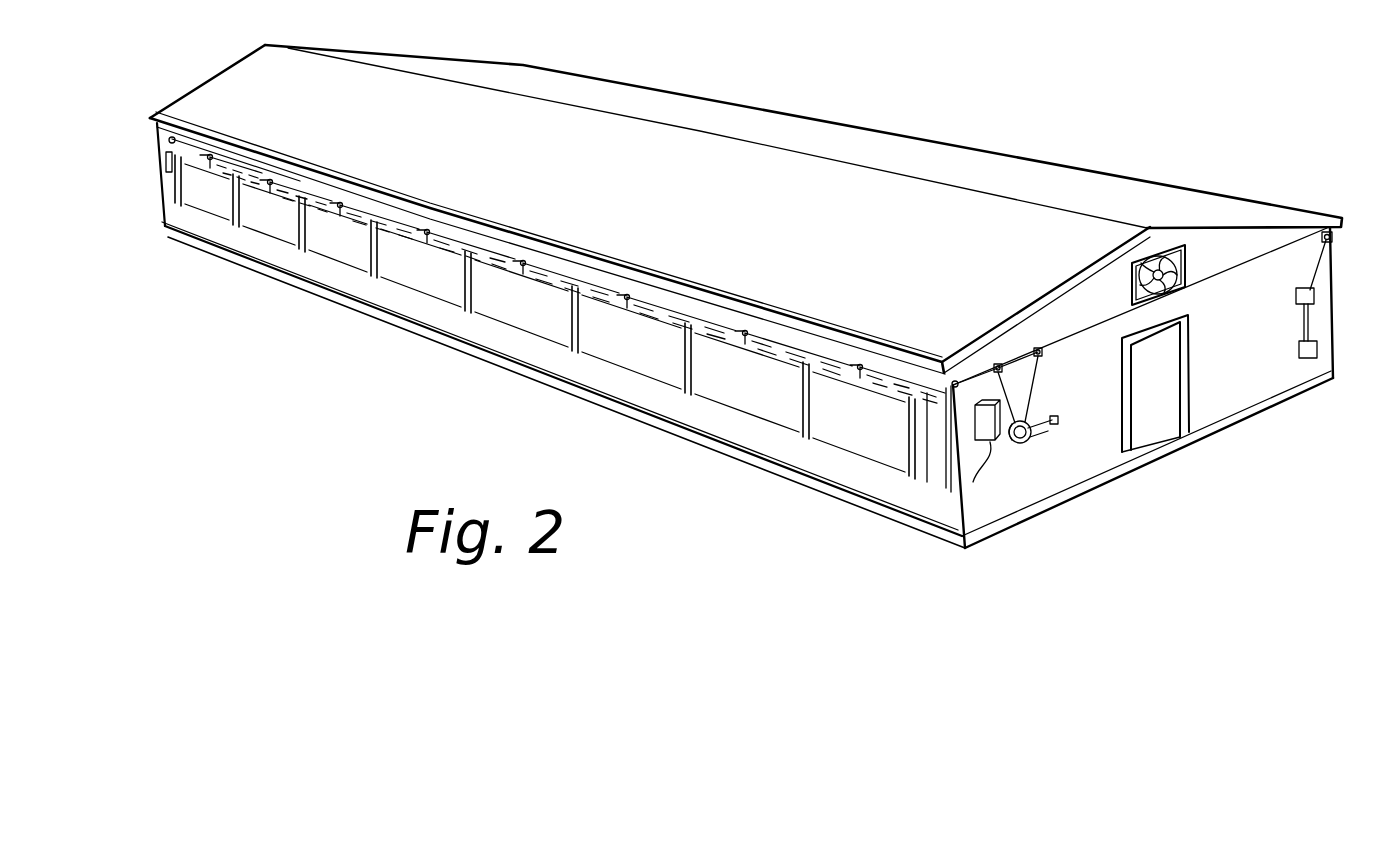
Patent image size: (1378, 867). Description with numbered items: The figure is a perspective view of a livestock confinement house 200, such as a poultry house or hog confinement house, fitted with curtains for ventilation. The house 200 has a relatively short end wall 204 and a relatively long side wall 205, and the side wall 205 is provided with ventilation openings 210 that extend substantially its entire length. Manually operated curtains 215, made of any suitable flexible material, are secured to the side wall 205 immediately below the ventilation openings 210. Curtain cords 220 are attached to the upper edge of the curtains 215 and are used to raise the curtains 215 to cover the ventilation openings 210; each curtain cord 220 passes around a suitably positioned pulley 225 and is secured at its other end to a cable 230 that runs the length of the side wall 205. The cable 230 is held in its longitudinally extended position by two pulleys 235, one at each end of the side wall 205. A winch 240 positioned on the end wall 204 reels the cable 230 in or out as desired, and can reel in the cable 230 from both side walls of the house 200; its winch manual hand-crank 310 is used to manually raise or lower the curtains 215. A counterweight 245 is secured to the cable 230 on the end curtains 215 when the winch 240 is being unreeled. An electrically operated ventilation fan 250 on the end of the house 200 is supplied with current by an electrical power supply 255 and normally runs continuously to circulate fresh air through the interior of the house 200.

The livestock confinement house 200 is at (729, 97).
The end wall 204 is at (1003, 505).
The side wall 205 is at (925, 500).
The ventilation openings 210 is at (800, 440).
The curtains 215 is at (210, 197).
The curtain cords 220 is at (755, 328).
The pulley 225 is at (860, 367).
The cable 230 is at (682, 298).
The pulleys 235 is at (174, 138).
The winch 240 is at (1002, 442).
The counterweight 245 is at (162, 163).
The ventilation fan 250 is at (1165, 260).
The electrical power supply 255 is at (1330, 250).
The winch manual hand-crank 310 is at (1048, 432).